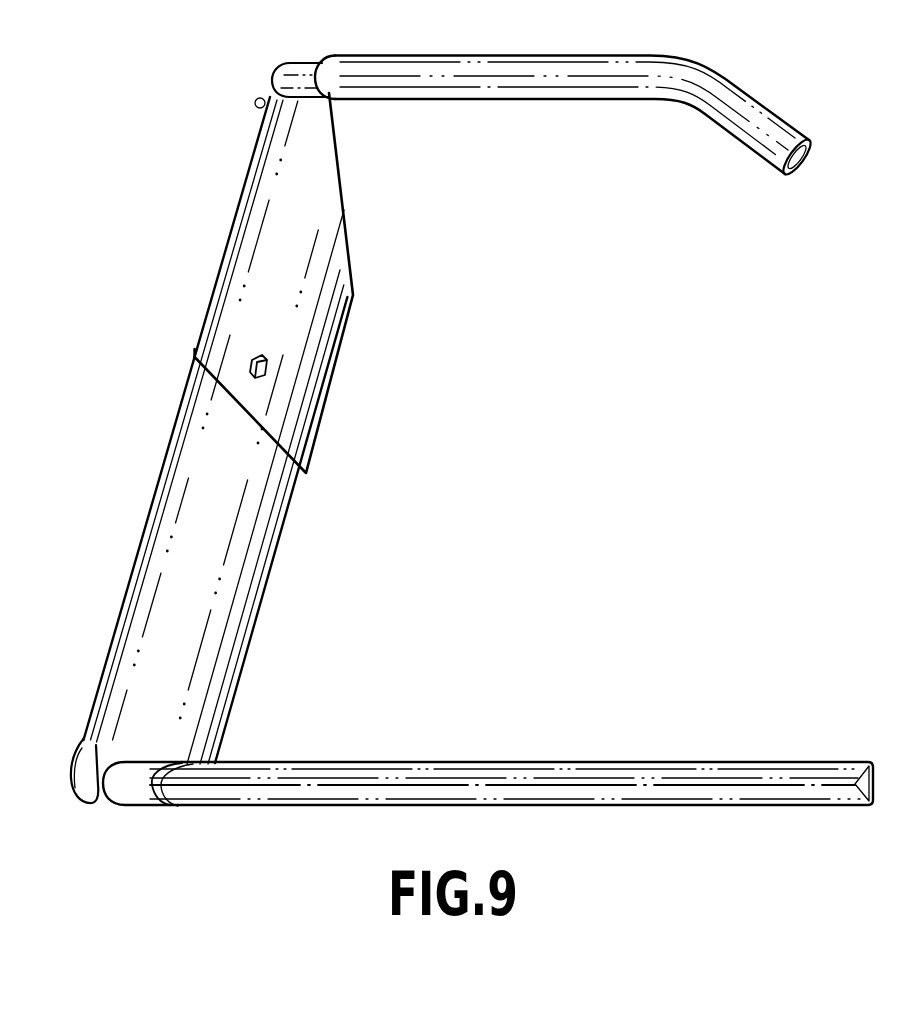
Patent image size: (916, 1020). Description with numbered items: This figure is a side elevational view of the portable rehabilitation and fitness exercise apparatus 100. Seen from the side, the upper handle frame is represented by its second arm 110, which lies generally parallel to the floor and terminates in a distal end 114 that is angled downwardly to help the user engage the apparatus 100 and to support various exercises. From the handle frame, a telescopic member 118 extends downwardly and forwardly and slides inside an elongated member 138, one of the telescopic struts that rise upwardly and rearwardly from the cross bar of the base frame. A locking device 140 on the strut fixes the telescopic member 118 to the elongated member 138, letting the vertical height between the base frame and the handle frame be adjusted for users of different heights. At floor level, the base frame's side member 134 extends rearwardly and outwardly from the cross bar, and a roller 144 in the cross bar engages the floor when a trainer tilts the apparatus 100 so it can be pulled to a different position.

The portable exercise apparatus 100 is at (186, 77).
The second arm 110 is at (582, 102).
The distal end 114 is at (763, 157).
The telescopic member 118 is at (302, 373).
The side member 134 is at (838, 764).
The elongated member 138 is at (252, 560).
The locking device 140 is at (250, 360).
The roller 144 is at (80, 797).